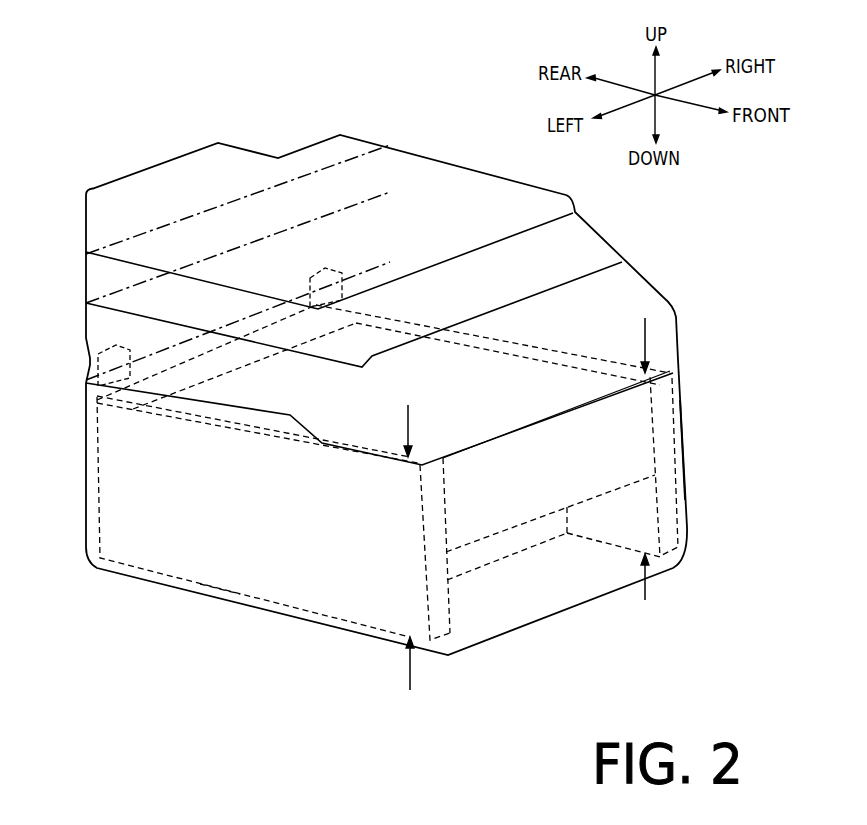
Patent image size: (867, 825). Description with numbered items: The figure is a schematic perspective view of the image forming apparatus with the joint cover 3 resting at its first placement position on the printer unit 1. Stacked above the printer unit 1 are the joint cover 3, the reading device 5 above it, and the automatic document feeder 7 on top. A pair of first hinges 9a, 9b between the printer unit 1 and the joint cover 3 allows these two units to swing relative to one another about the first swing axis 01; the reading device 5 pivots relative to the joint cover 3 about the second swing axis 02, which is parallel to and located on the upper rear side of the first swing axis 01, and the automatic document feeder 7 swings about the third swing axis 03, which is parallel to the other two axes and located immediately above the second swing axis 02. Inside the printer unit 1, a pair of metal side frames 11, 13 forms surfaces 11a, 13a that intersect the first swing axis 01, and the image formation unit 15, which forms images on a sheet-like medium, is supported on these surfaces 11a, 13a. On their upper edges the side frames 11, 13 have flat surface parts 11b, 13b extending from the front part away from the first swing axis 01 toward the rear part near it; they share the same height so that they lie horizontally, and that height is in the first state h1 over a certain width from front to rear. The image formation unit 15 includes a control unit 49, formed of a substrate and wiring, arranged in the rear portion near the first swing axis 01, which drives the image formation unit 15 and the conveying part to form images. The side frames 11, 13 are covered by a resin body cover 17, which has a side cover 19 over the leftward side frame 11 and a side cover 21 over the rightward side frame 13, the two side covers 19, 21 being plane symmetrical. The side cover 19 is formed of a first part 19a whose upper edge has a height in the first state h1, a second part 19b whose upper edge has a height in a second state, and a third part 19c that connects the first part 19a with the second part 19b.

The printer unit 1 is at (114, 476).
The joint cover 3 is at (466, 398).
The reading device 5 is at (514, 283).
The automatic document feeder 7 is at (450, 223).
The first hinge 9a is at (120, 355).
The first hinge 9b is at (336, 270).
The side frame 11 is at (355, 586).
The surface 11a is at (223, 562).
The flat surface part 11b is at (348, 432).
The side frame 13 is at (582, 521).
The surface 13a is at (636, 502).
The flat surface part 13b is at (560, 345).
The image formation unit 15 is at (628, 430).
The body cover 17 is at (146, 548).
The side cover 19 is at (287, 578).
The first part 19a is at (378, 442).
The second part 19b is at (190, 383).
The third part 19c is at (318, 425).
The side cover 21 is at (690, 532).
The control unit 49 is at (260, 362).
The first swing axis 01 is at (87, 383).
The second swing axis 02 is at (87, 305).
The third swing axis 03 is at (87, 256).
The first state height h1 is at (526, 504).